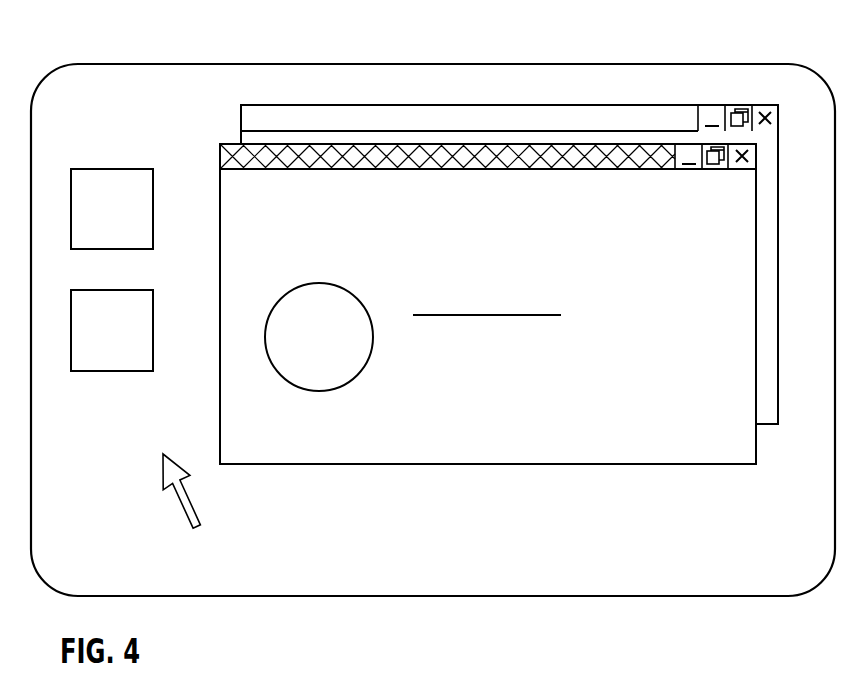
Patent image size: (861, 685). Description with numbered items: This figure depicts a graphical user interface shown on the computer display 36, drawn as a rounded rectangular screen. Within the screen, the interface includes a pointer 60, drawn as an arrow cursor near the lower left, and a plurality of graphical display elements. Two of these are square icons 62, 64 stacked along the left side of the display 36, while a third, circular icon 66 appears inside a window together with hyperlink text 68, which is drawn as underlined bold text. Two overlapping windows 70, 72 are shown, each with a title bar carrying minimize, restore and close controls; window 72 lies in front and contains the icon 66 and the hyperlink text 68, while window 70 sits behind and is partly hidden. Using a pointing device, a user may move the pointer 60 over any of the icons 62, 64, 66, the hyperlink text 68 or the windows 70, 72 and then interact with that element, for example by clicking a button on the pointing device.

The computer display 36 is at (594, 64).
The pointer 60 is at (188, 520).
The icon 62 is at (153, 222).
The icon 64 is at (153, 348).
The icon 66 is at (302, 388).
The hyperlink text 68 is at (465, 316).
The window 70 is at (763, 425).
The window 72 is at (398, 466).